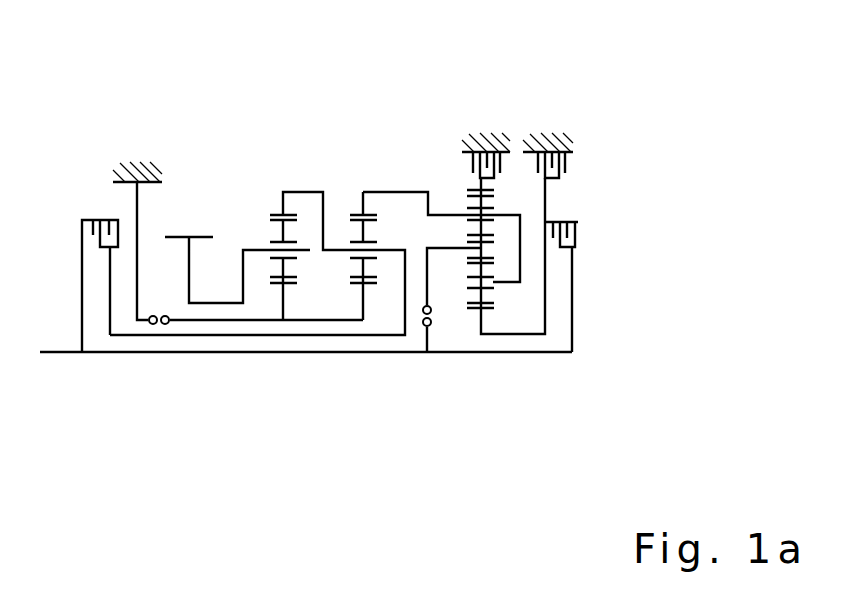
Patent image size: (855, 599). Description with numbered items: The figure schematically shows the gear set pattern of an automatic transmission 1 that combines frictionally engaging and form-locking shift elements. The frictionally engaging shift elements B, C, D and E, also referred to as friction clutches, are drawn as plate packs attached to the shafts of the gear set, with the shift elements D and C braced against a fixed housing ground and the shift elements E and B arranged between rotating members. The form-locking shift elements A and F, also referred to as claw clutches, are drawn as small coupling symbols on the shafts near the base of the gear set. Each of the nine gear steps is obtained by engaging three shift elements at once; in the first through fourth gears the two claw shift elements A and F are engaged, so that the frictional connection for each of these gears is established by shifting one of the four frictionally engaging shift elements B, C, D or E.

The automatic transmission 1 is at (196, 132).
The frictionally engaging shift element E is at (82, 232).
The frictionally engaging shift element D is at (497, 168).
The frictionally engaging shift element C is at (563, 165).
The frictionally engaging shift element B is at (578, 232).
The form-locking shift element F is at (158, 326).
The form-locking shift element A is at (420, 318).